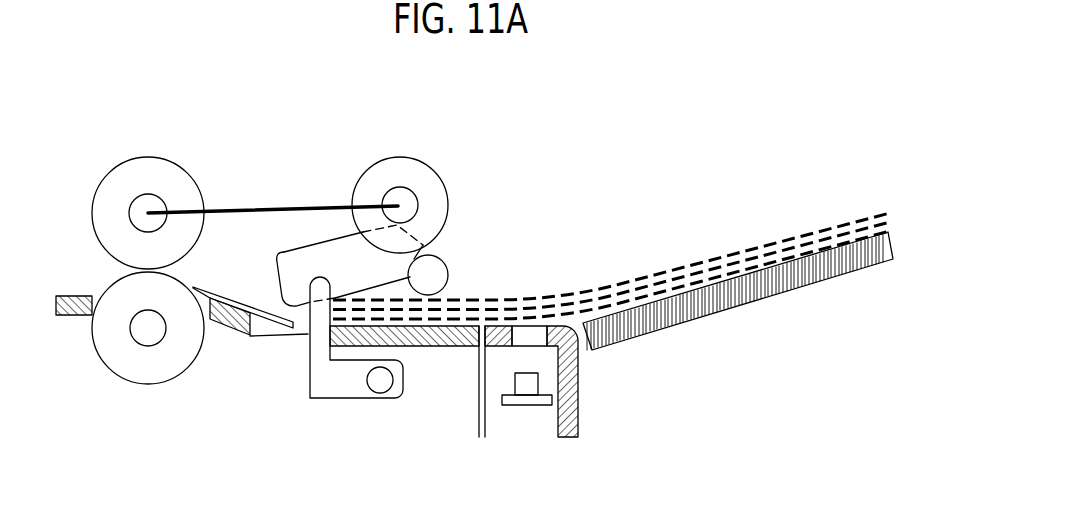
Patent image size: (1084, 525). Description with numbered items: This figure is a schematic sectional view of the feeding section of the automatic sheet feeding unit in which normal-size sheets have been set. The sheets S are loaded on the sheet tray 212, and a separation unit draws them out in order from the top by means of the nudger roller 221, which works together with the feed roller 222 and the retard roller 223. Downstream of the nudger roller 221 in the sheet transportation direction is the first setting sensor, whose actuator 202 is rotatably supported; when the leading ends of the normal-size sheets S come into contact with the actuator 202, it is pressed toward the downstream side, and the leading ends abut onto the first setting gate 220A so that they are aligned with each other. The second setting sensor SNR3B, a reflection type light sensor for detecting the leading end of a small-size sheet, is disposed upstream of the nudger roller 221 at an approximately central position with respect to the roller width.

The feed roller 222 is at (137, 180).
The retard roller 223 is at (147, 358).
The nudger roller 221 is at (430, 190).
The actuator 202 is at (345, 263).
The first setting gate 220A is at (323, 334).
The sheet S is at (708, 262).
The sheet tray 212 is at (867, 252).
The second setting sensor SNR3B is at (525, 411).